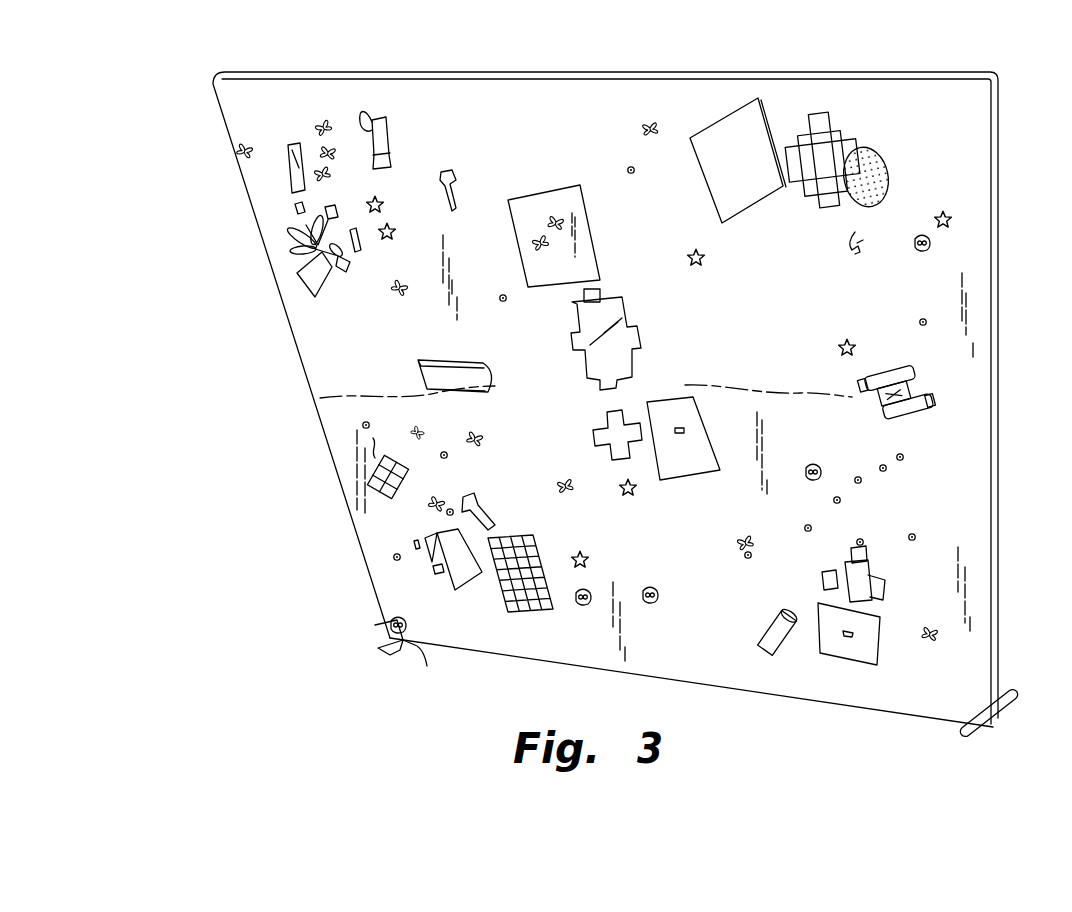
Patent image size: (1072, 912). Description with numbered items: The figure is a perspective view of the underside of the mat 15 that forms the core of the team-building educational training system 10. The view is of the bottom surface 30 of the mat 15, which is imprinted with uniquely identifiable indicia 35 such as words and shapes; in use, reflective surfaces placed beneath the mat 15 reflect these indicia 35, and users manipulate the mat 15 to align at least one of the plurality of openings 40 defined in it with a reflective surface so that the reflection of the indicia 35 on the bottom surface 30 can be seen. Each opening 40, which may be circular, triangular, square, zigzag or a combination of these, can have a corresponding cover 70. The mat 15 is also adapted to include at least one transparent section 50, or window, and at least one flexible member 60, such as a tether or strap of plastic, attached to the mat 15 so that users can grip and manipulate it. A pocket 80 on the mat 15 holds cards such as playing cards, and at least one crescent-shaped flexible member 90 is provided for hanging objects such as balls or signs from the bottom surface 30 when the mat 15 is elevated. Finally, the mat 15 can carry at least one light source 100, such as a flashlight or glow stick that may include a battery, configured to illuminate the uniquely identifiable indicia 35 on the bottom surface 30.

The team-building educational training system 10 is at (158, 98).
The mat 15 is at (333, 383).
The bottom surface 30 is at (703, 592).
The uniquely identifiable indicia 35 is at (560, 108).
The openings 40 is at (420, 548).
The transparent section 50 is at (643, 412).
The flexible member 60 is at (393, 653).
The cover 70 is at (313, 275).
The pocket 80 is at (327, 213).
The crescent-shaped flexible member 90 is at (325, 212).
The light source 100 is at (443, 173).